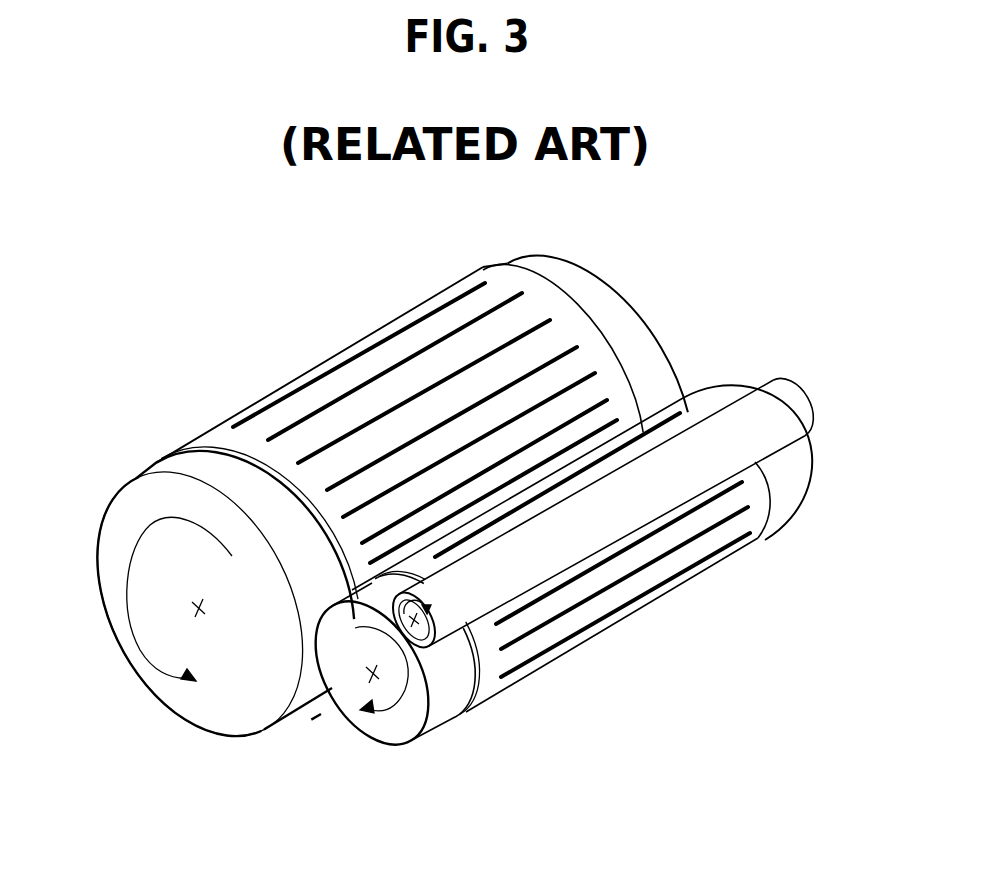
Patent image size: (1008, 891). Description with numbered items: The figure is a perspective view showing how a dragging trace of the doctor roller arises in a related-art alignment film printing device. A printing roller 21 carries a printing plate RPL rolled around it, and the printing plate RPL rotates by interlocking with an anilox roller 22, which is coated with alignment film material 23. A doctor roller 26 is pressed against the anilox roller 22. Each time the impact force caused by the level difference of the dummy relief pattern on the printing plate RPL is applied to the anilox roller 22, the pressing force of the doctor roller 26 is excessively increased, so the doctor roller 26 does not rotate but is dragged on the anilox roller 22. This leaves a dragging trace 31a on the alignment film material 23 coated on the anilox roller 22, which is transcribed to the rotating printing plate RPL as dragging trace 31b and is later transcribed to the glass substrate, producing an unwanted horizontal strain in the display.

The printing roller 21 is at (165, 682).
The anilox roller 22 is at (383, 730).
The alignment film material 23 is at (767, 508).
The doctor roller 26 is at (805, 388).
The dragging trace 31a is at (600, 623).
The dragging trace 31b is at (380, 407).
The printing plate RPL is at (440, 290).